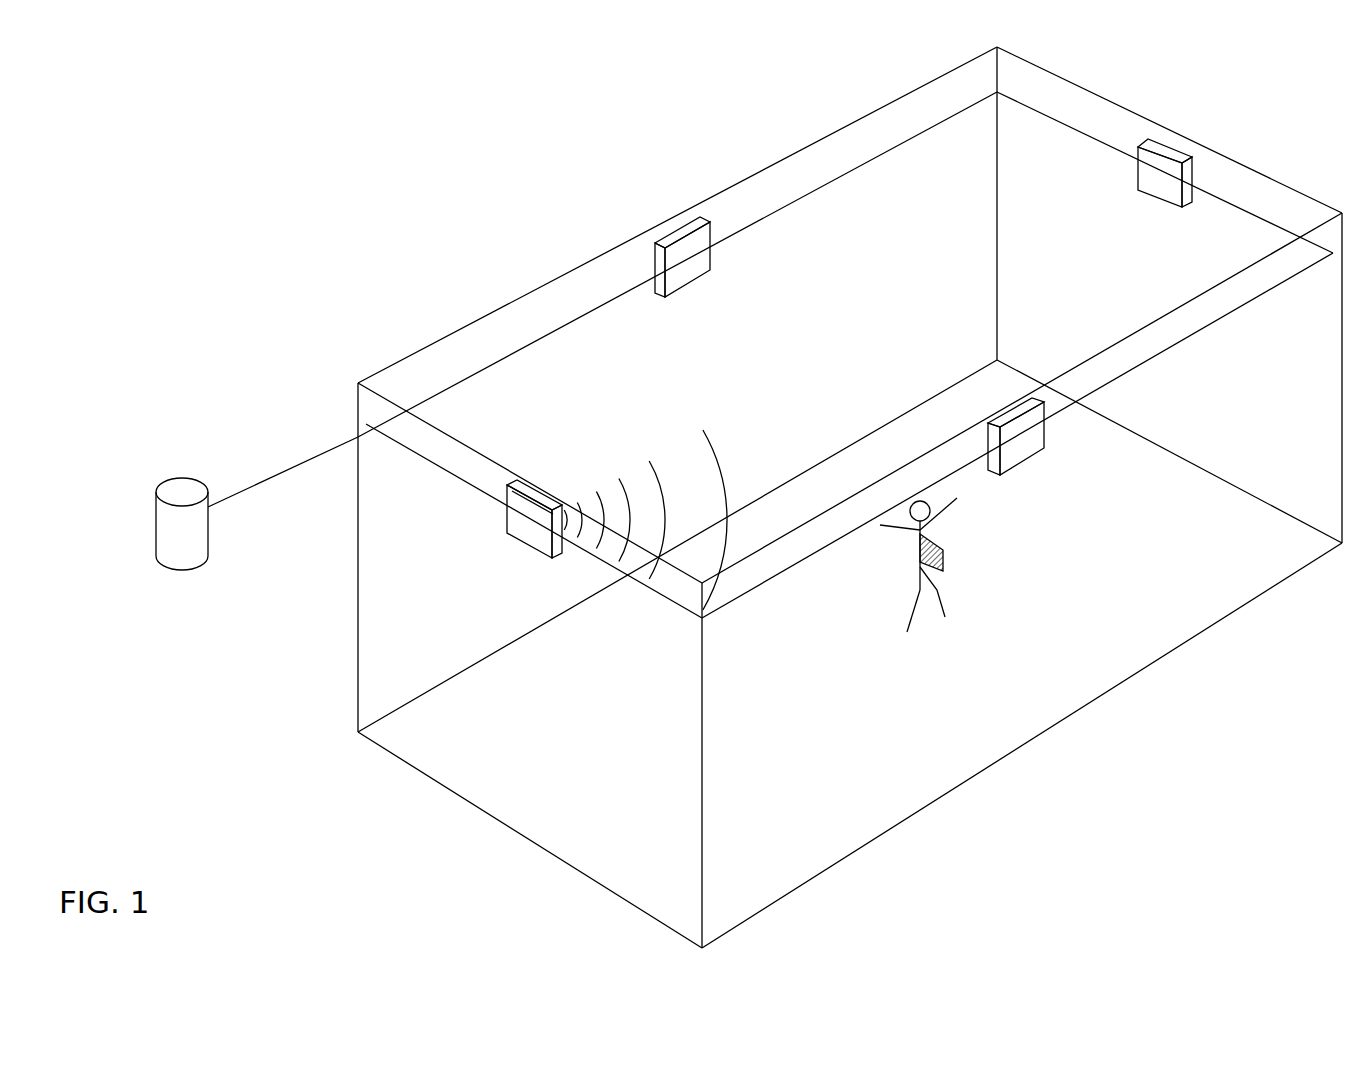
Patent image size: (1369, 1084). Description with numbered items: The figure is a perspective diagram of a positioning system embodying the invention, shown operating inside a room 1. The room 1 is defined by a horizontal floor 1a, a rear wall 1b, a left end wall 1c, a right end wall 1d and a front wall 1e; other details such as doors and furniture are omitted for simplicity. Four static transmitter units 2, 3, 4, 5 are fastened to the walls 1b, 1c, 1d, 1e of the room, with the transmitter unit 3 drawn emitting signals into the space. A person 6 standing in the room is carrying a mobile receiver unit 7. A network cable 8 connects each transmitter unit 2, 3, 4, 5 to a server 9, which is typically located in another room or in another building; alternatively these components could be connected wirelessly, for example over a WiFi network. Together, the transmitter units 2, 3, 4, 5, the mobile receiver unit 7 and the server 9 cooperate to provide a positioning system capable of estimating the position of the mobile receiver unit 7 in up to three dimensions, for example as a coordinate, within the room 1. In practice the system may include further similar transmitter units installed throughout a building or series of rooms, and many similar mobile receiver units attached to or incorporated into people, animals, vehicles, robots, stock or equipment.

The room 1 is at (850, 497).
The horizontal floor 1a is at (980, 704).
The rear wall 1b is at (948, 189).
The left end wall 1c is at (661, 669).
The right end wall 1d is at (1048, 172).
The front wall 1e is at (762, 679).
The static transmitter unit 2 is at (687, 250).
The static transmitter unit 3 is at (530, 523).
The static transmitter unit 4 is at (1160, 173).
The static transmitter unit 5 is at (1020, 438).
The person 6 is at (903, 523).
The mobile receiver unit 7 is at (943, 555).
The network cable 8 is at (532, 290).
The server 9 is at (182, 488).